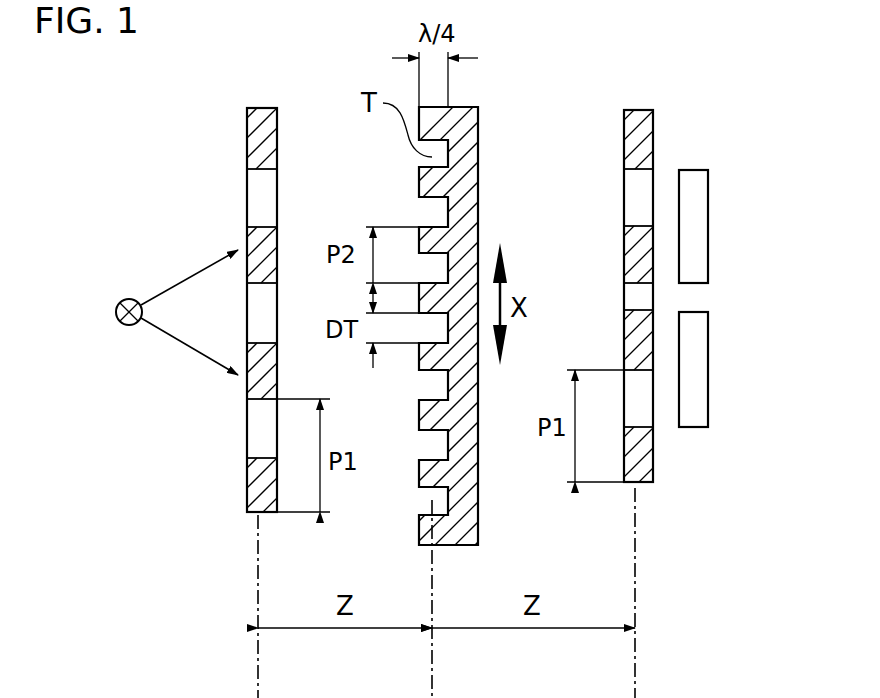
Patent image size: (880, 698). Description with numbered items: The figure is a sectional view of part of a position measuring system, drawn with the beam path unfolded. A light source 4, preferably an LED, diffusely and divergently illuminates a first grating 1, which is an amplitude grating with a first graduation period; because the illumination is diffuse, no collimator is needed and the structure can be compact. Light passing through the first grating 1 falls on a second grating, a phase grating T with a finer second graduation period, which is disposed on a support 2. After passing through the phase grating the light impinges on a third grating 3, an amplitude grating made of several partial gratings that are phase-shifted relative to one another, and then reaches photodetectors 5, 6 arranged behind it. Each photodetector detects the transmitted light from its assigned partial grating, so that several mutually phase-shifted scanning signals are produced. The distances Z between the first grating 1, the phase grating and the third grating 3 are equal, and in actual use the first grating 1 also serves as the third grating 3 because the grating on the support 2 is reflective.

The first grating 1 is at (242, 140).
The support 2 is at (468, 172).
The third grating 3 is at (640, 154).
The light source 4 is at (119, 309).
The photodetector 5 is at (695, 241).
The photodetector 6 is at (695, 370).